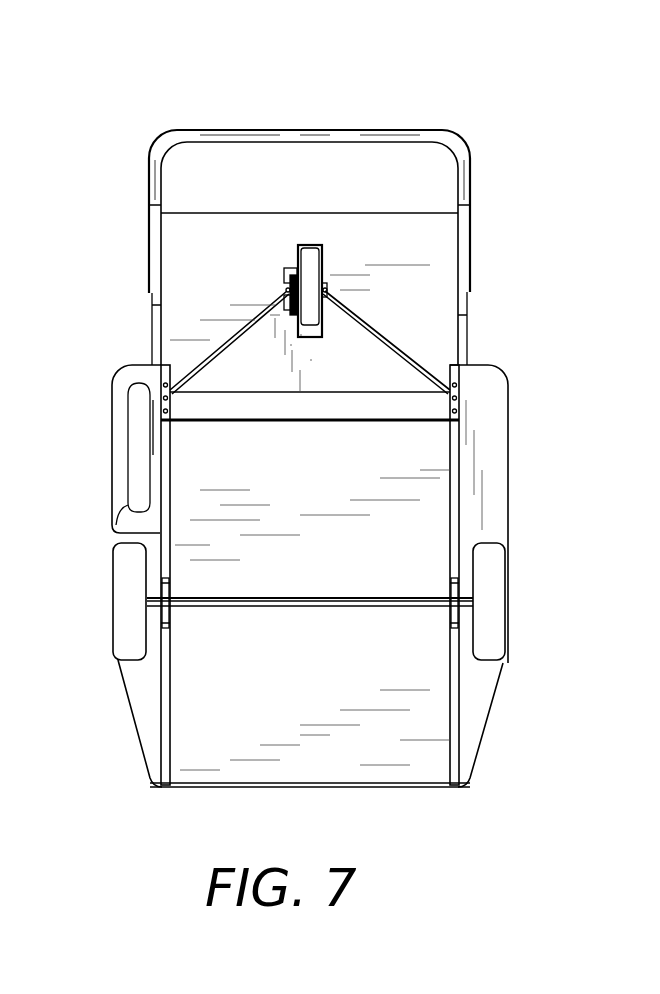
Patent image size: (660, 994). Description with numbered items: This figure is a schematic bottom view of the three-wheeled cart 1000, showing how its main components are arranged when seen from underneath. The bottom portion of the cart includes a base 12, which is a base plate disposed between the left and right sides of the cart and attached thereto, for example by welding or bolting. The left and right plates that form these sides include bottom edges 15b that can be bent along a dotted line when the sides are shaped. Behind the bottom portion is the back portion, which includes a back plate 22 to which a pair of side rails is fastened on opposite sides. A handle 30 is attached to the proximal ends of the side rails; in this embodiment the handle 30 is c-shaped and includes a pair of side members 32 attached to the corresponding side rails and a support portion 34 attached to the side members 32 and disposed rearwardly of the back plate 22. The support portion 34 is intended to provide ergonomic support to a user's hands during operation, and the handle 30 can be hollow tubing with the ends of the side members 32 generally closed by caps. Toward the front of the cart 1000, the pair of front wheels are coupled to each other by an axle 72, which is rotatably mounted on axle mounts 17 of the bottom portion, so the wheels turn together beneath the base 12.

The three-wheeled cart 1000 is at (518, 90).
The handle 30 is at (331, 122).
The support portion 34 is at (278, 129).
The side members 32 is at (150, 195).
The back plate 22 is at (255, 258).
The bottom edges 15b is at (164, 460).
The base 12 is at (327, 575).
The axle 72 is at (300, 608).
The axle mounts 17 is at (174, 622).